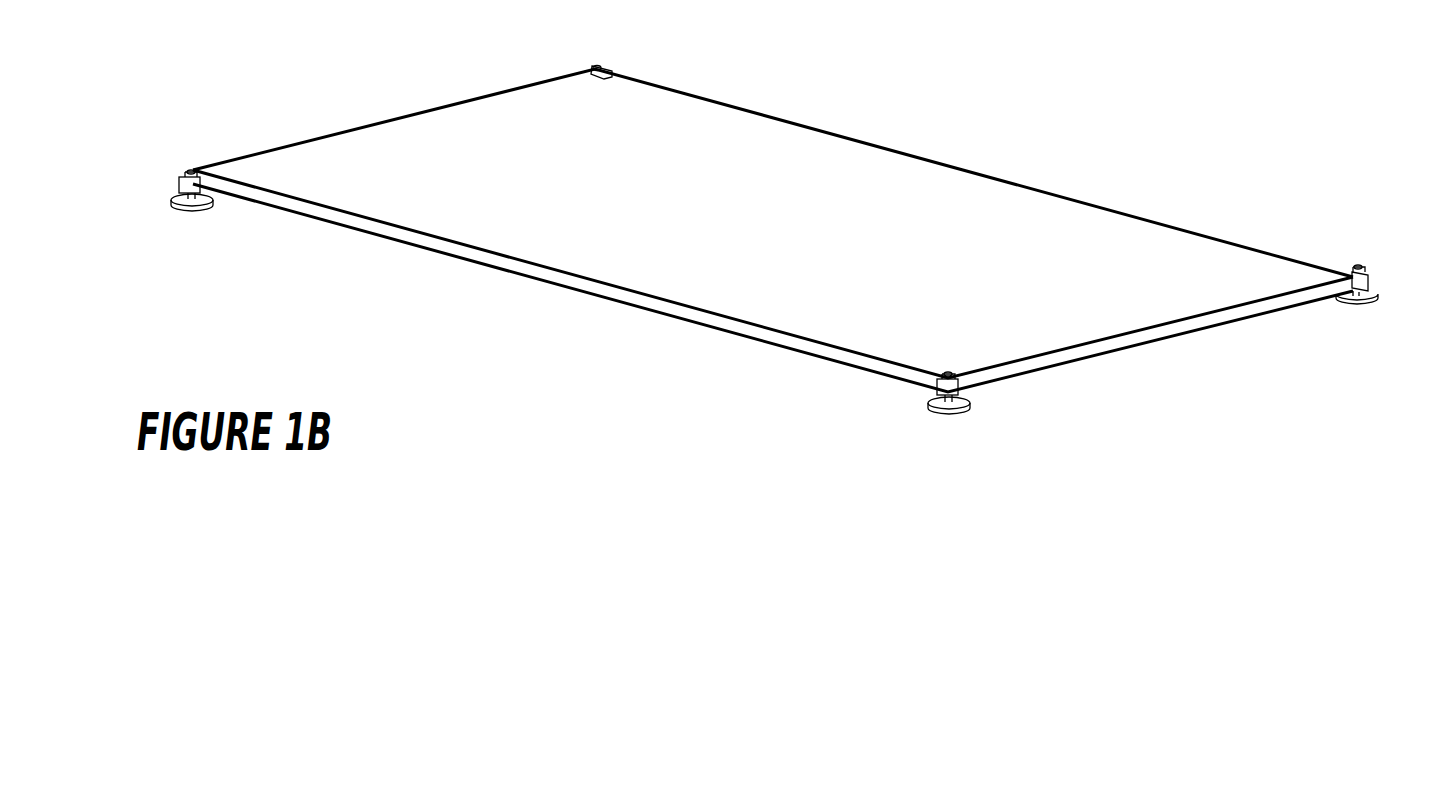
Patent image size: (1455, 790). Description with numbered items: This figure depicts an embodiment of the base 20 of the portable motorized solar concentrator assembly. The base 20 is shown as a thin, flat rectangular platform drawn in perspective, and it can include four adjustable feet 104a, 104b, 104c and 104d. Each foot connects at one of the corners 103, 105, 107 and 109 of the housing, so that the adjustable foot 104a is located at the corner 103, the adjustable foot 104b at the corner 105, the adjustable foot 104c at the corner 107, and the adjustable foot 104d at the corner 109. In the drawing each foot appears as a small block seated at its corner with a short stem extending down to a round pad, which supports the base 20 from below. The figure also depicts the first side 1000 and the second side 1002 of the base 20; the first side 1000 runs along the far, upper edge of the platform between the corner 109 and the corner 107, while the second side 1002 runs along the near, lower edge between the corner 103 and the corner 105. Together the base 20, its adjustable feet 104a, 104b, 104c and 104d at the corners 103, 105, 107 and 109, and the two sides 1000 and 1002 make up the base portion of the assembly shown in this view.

The first side 1000 is at (856, 113).
The second side 1002 is at (560, 308).
The base 20 is at (1177, 330).
The corner 103 is at (181, 148).
The adjustable foot 104a is at (180, 187).
The adjustable foot 104b is at (937, 390).
The adjustable foot 104c is at (1369, 281).
The adjustable foot 104d is at (612, 73).
The corner 105 is at (985, 399).
The corner 107 is at (1353, 305).
The corner 109 is at (566, 46).